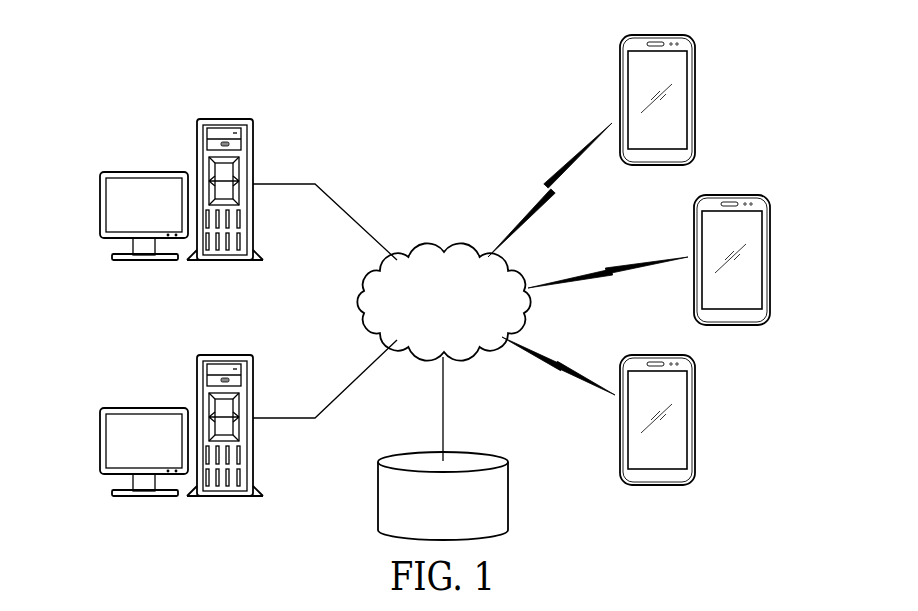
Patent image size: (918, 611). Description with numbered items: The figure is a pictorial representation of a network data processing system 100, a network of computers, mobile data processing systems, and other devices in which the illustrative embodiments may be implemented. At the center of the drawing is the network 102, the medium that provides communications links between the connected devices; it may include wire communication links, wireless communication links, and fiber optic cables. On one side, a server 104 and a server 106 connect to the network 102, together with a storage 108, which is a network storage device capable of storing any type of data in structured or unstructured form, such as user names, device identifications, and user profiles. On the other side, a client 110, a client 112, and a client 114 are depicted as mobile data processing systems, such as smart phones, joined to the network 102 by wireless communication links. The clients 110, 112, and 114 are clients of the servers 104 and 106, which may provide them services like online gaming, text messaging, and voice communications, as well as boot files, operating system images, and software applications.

The network data processing system 100 is at (341, 72).
The network 102 is at (420, 255).
The server 104 is at (100, 204).
The server 106 is at (100, 441).
The storage 108 is at (378, 493).
The client 110 is at (696, 100).
The client 112 is at (772, 258).
The client 114 is at (696, 420).